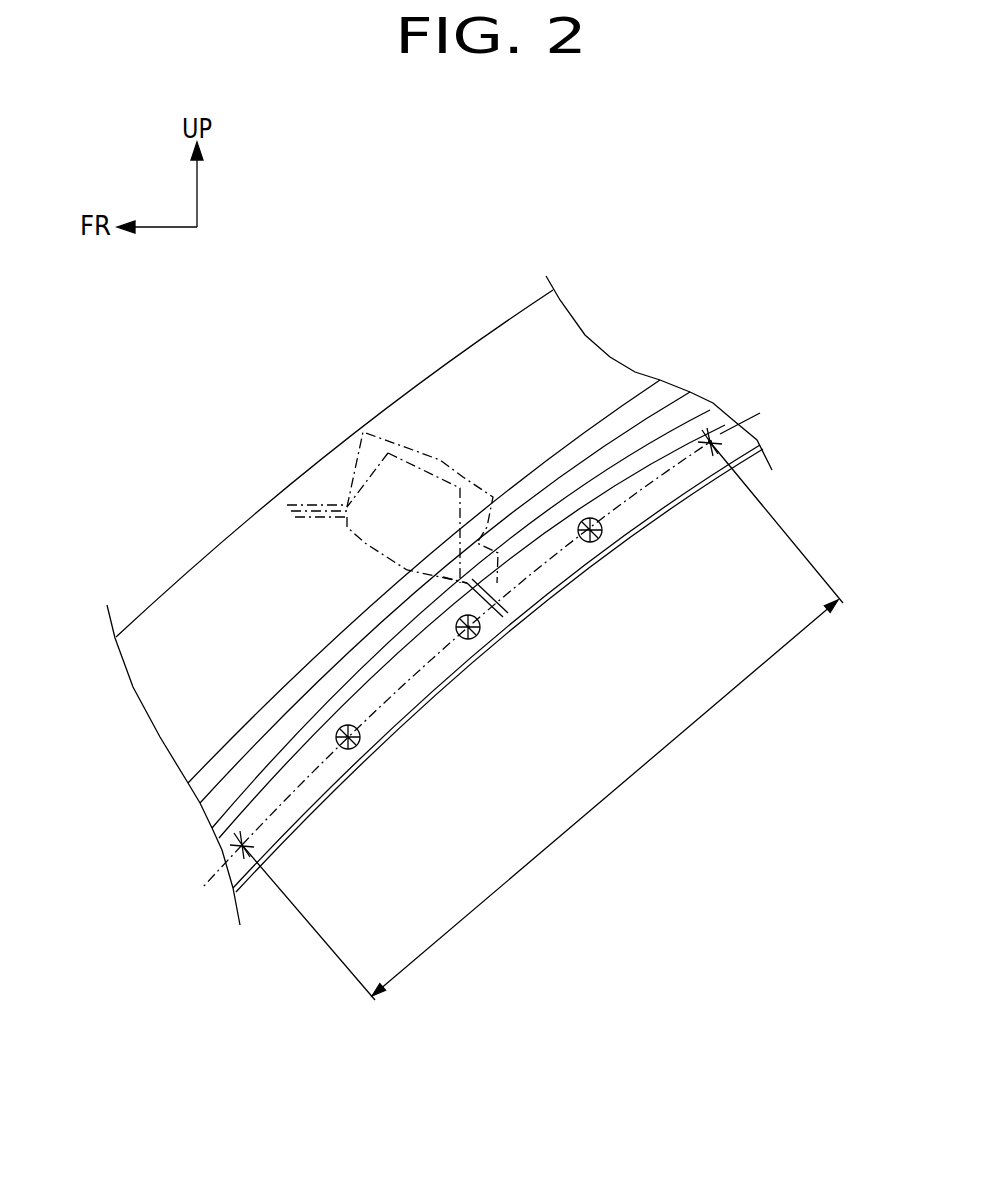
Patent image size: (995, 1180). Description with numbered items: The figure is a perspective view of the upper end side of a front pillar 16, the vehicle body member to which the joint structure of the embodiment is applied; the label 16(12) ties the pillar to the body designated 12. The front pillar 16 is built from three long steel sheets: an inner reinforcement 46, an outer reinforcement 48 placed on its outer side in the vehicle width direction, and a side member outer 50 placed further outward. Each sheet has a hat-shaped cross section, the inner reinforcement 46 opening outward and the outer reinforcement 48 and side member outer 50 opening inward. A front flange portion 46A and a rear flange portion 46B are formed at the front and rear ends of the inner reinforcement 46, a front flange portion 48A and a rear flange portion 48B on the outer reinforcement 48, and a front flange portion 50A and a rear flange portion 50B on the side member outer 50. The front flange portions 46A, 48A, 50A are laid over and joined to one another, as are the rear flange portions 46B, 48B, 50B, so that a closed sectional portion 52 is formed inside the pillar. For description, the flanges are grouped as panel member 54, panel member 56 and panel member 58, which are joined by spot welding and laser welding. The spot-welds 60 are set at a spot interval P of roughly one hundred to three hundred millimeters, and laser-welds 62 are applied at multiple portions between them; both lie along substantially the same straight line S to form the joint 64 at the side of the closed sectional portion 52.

The vehicle body 12 is at (475, 627).
The front pillar 16 is at (233, 377).
The inner reinforcement 46 is at (367, 547).
The outer reinforcement 48 is at (413, 457).
The side member outer 50 is at (502, 347).
The closed sectional portion 52 is at (418, 497).
The panel member 54 is at (401, 560).
The panel member 56 is at (447, 524).
The panel member 58 is at (487, 619).
The front flange portion 46A is at (302, 513).
The front flange portion 48A is at (287, 512).
The front flange portion 50A is at (317, 497).
The rear flange portion 46B is at (490, 640).
The rear flange portion 48B is at (500, 620).
The rear flange portion 50B is at (533, 588).
The spot-weld 60 is at (722, 441).
The laser-weld 62 is at (357, 748).
The joint 64 is at (703, 433).
The straight line S is at (217, 885).
The spot interval P is at (613, 783).